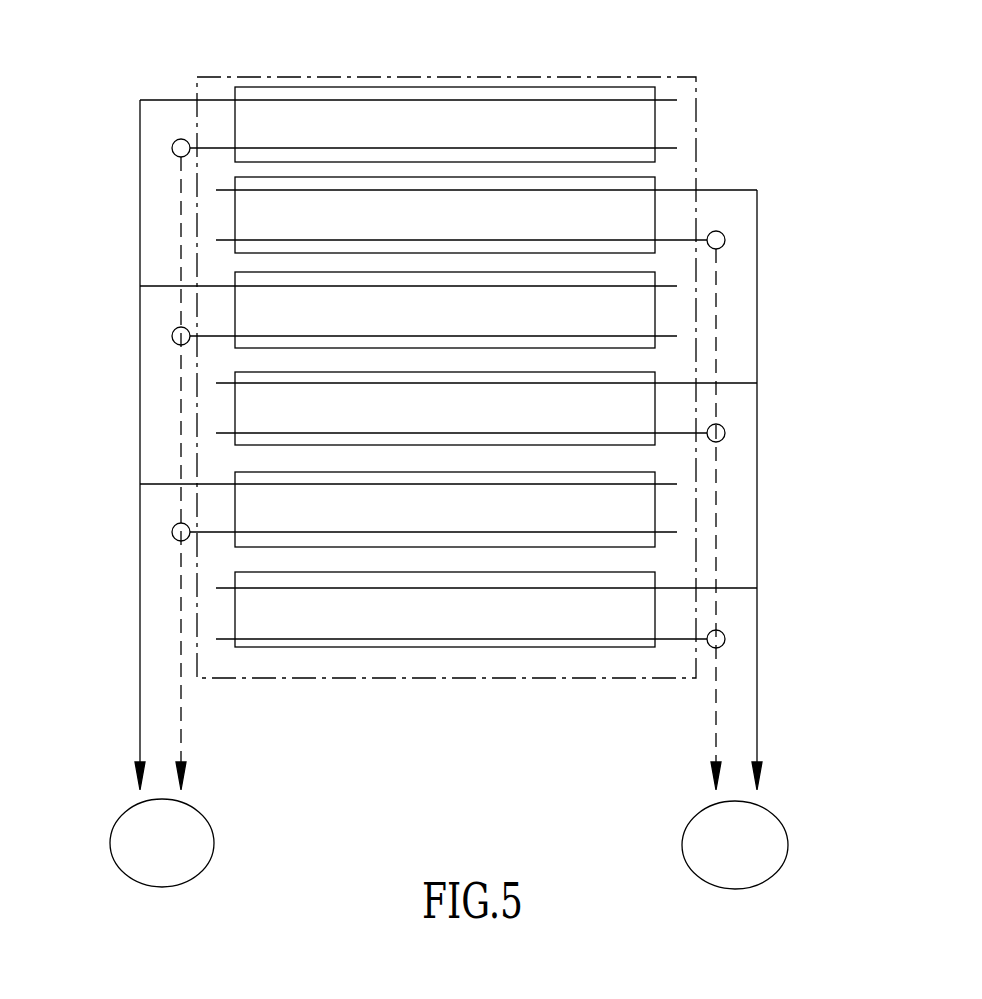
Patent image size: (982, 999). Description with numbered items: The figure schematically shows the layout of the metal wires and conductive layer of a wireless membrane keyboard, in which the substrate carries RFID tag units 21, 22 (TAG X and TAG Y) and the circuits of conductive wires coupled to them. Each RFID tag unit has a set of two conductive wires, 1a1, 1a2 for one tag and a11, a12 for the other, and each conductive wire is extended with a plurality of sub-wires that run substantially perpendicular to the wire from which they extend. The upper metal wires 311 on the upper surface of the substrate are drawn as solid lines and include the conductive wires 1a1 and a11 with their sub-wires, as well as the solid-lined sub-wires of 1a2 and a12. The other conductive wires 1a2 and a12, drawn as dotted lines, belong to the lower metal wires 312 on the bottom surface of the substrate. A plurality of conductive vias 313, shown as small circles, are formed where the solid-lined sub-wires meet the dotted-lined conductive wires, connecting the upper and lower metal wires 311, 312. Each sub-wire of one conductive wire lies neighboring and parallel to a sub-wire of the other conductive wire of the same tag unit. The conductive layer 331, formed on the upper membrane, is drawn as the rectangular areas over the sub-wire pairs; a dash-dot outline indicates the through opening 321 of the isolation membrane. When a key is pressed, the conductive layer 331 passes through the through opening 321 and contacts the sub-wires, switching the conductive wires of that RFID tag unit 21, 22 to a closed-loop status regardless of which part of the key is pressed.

The conductive layer 331 is at (428, 85).
The through opening 321 is at (700, 181).
The upper metal wire 311 is at (140, 240).
The lower metal wire 312 is at (181, 275).
The via 313 is at (175, 342).
The conductive wire a11 is at (441, 300).
The conductive wire a12 is at (466, 336).
The conductive wire 1a1 is at (486, 402).
The conductive wire 1a2 is at (461, 426).
The RFID tag unit 22 is at (130, 812).
The RFID tag unit 21 is at (763, 806).